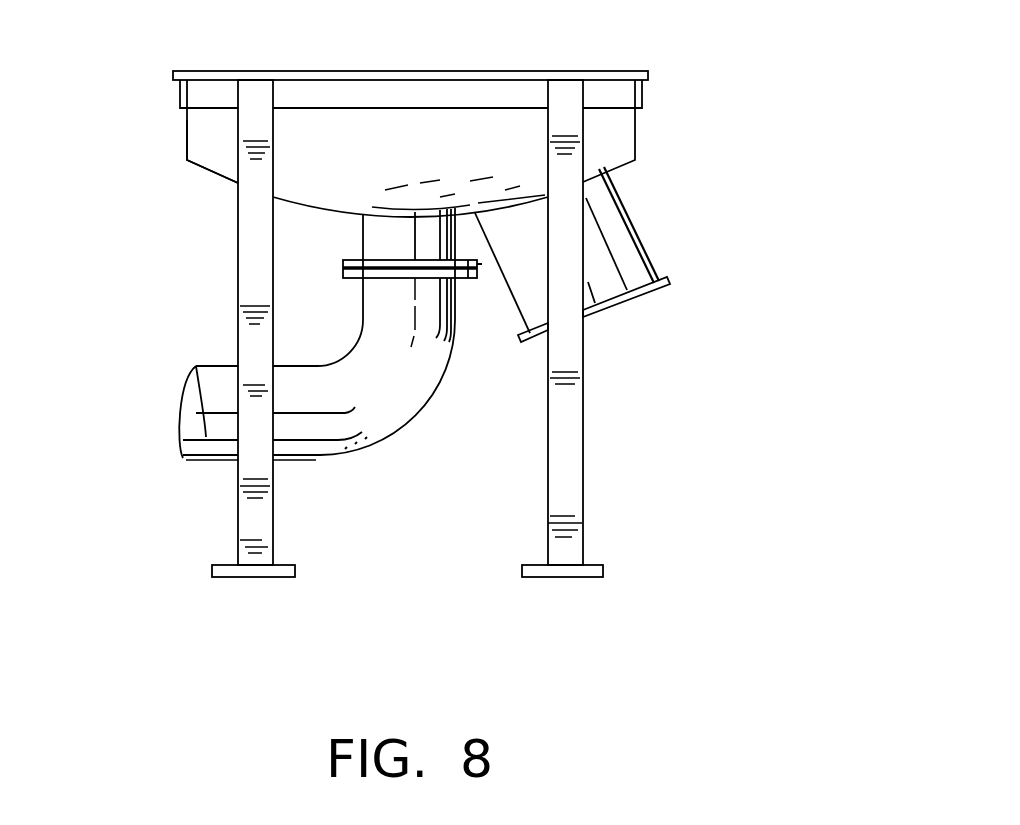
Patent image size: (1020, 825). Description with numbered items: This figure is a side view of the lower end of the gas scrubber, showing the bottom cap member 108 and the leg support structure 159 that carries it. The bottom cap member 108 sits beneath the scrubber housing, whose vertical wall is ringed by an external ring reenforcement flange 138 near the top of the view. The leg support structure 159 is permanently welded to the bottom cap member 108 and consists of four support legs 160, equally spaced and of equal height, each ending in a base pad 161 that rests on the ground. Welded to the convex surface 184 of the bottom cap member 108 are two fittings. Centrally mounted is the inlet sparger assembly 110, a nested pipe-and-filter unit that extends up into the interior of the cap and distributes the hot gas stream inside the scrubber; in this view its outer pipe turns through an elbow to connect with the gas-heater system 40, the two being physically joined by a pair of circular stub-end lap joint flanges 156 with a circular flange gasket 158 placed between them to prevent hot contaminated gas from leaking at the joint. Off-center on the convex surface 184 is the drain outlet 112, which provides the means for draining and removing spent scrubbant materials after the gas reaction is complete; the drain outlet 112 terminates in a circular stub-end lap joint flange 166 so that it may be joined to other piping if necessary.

The bottom cap member 108 is at (437, 130).
The external ring reenforcement flange 138 is at (643, 88).
The convex surface 184 is at (204, 170).
The inlet sparger assembly 110 is at (390, 245).
The gas-heater system 40 is at (204, 433).
The circular flange gasket 158 is at (428, 278).
The circular stub-end lap joint flange 156 is at (475, 278).
The drain outlet 112 is at (622, 235).
The circular stub-end lap joint flange 166 is at (655, 285).
The support leg 160 is at (255, 515).
The base pad 161 is at (253, 577).
The leg support structure 159 is at (607, 498).